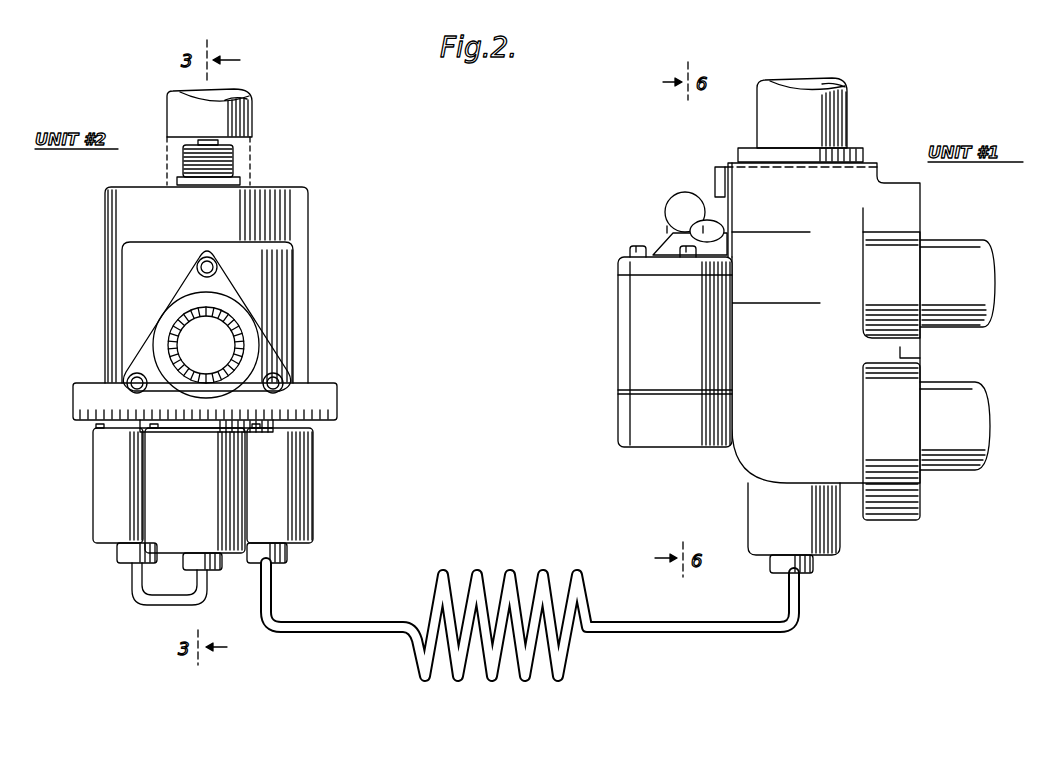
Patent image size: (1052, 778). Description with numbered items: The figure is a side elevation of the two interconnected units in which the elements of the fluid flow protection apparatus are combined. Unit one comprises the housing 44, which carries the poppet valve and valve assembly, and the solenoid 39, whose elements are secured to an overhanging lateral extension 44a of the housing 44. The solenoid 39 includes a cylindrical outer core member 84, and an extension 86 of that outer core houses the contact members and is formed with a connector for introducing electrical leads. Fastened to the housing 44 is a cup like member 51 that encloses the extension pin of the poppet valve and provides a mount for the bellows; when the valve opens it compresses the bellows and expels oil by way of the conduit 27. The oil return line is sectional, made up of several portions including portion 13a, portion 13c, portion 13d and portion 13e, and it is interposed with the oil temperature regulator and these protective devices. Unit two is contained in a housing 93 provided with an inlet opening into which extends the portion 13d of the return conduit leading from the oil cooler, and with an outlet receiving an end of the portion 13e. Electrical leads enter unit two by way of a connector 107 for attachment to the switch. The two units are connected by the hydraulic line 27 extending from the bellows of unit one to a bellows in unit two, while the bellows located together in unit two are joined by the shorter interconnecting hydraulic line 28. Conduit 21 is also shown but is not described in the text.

The portion of return conduit 13d is at (245, 143).
The connector 107 is at (233, 168).
The housing 93 is at (282, 210).
The portion of return conduit 13e is at (243, 343).
The hydraulic line 28 is at (160, 607).
The hydraulic line 27 is at (690, 638).
The portion of return conduit 13a is at (806, 80).
The overhanging lateral extension 44a is at (697, 172).
The housing 44 is at (903, 203).
The conduit 21 is at (983, 258).
The outer core member 84 is at (633, 316).
The solenoid 39 is at (644, 346).
The extension of outer core 86 is at (622, 413).
The portion of return conduit 13c is at (975, 410).
The cup shaped member 51 is at (765, 507).